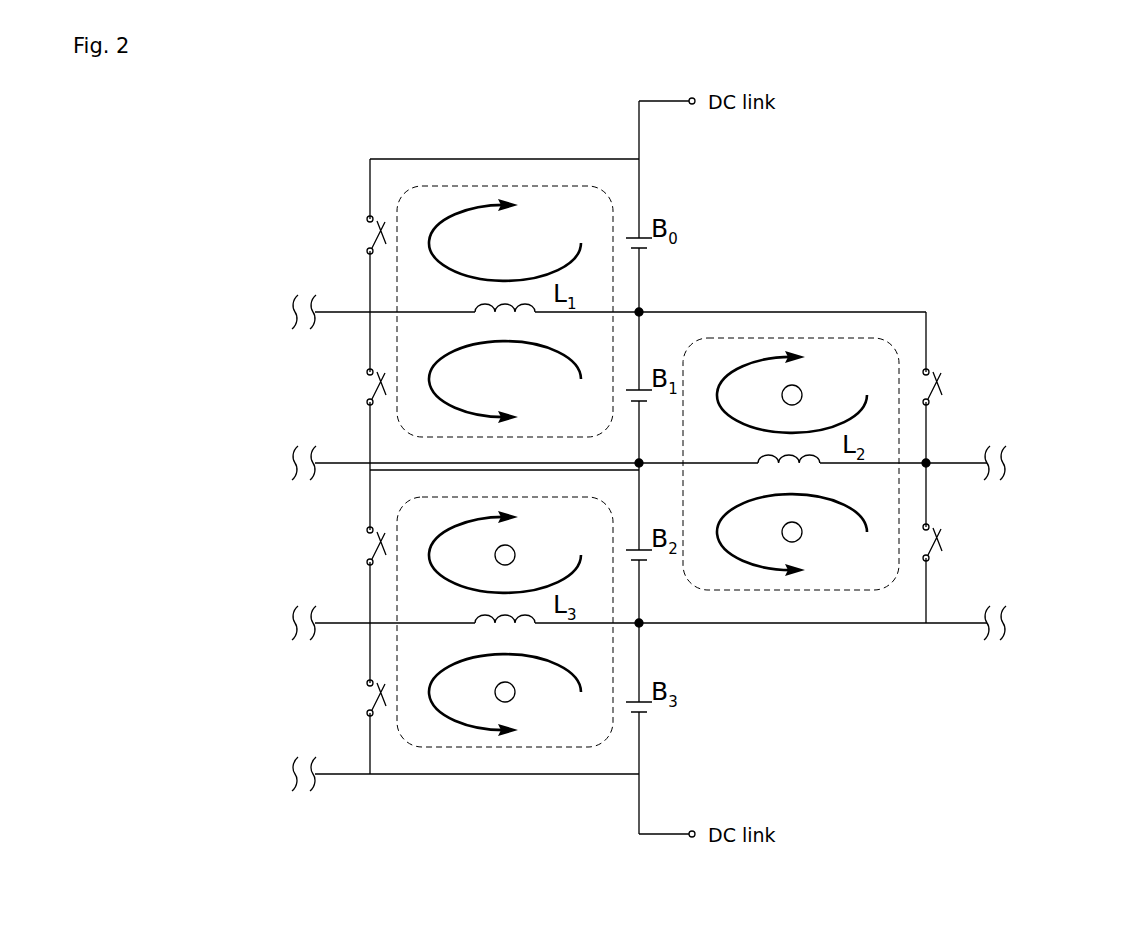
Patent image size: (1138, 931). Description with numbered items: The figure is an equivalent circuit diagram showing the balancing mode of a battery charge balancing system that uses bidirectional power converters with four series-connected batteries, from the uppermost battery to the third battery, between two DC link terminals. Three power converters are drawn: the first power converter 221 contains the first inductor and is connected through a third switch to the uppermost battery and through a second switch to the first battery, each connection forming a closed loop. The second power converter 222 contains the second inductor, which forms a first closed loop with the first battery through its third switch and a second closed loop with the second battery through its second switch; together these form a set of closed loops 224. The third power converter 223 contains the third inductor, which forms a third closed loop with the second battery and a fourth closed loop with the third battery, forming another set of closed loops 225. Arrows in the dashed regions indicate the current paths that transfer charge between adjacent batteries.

The first power converter 221 is at (304, 383).
The second power converter 222 is at (1004, 538).
The third power converter 223 is at (304, 694).
The set of closed loops 224 is at (845, 338).
The set of closed loops 225 is at (483, 748).